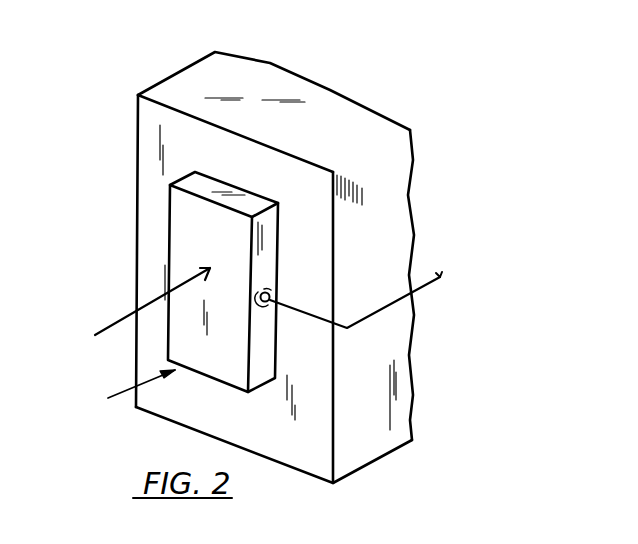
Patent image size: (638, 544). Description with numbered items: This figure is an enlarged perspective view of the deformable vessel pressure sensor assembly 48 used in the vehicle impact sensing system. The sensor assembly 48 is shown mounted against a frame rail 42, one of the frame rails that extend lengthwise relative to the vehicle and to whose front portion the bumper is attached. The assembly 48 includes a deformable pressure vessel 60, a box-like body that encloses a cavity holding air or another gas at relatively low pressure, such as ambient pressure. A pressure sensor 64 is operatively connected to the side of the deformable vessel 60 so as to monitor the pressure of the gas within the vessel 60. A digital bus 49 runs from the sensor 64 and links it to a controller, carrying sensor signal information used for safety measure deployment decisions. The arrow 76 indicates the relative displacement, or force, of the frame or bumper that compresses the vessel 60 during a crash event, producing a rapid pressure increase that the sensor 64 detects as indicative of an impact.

The frame rail 42 is at (252, 99).
The deformable vessel pressure sensor assembly 48 is at (122, 391).
The digital bus 49 is at (426, 289).
The deformable pressure vessel 60 is at (182, 203).
The pressure sensor 64 is at (280, 288).
The arrow 76 is at (163, 298).